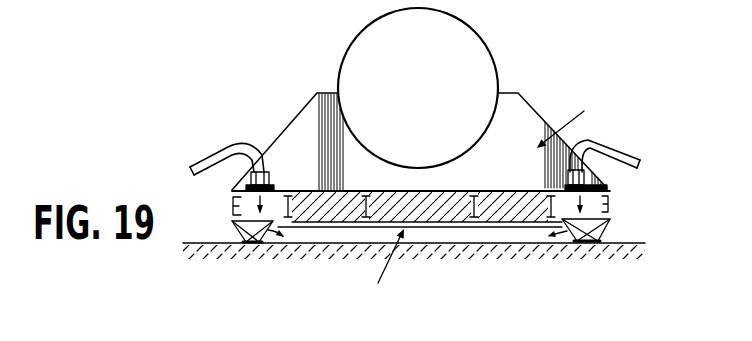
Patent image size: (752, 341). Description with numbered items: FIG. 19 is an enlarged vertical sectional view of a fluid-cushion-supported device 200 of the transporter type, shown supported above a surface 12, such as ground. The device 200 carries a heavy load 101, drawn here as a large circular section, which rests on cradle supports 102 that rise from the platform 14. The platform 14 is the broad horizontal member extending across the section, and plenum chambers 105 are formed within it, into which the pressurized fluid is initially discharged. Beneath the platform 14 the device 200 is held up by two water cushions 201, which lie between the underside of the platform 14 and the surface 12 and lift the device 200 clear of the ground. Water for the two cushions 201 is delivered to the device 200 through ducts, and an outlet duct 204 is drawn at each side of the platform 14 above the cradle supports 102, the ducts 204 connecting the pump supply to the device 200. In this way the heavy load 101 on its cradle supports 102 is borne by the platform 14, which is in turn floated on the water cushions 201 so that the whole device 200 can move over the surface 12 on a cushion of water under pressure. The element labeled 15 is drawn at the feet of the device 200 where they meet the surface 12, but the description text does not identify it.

The heavy load 101 is at (432, 68).
The cradle supports 102 is at (295, 116).
The outlet duct 204 is at (226, 154).
The platform 14 is at (469, 184).
The plenum chambers 105 is at (229, 207).
The device 200 is at (581, 121).
The foot pad 15 is at (616, 230).
The surface 12 is at (213, 243).
The water cushions 201 is at (379, 271).